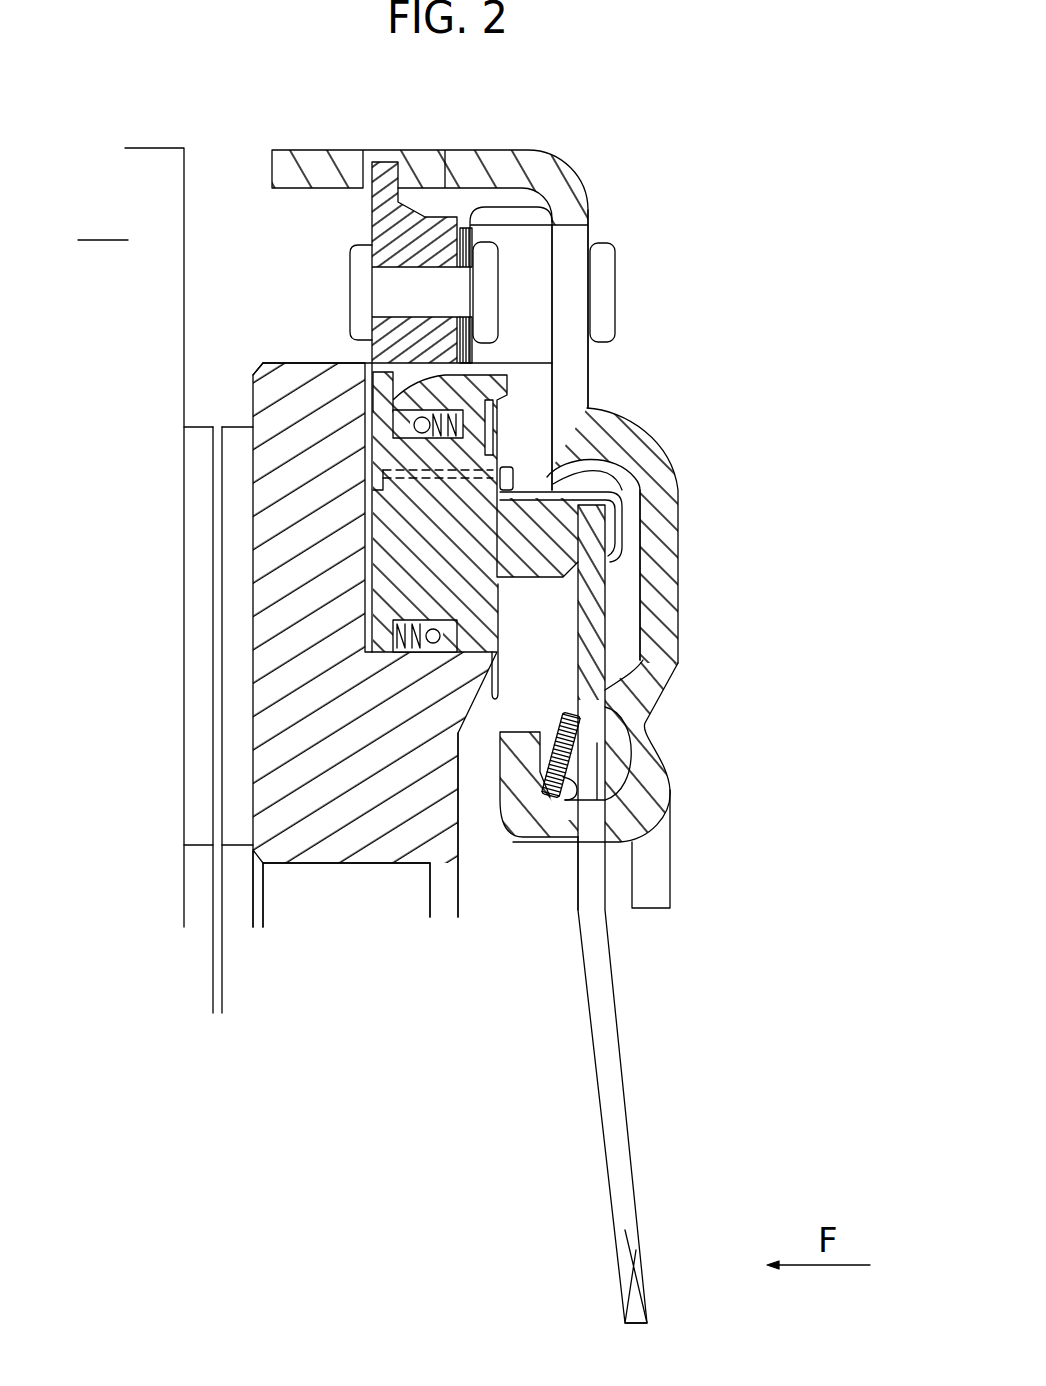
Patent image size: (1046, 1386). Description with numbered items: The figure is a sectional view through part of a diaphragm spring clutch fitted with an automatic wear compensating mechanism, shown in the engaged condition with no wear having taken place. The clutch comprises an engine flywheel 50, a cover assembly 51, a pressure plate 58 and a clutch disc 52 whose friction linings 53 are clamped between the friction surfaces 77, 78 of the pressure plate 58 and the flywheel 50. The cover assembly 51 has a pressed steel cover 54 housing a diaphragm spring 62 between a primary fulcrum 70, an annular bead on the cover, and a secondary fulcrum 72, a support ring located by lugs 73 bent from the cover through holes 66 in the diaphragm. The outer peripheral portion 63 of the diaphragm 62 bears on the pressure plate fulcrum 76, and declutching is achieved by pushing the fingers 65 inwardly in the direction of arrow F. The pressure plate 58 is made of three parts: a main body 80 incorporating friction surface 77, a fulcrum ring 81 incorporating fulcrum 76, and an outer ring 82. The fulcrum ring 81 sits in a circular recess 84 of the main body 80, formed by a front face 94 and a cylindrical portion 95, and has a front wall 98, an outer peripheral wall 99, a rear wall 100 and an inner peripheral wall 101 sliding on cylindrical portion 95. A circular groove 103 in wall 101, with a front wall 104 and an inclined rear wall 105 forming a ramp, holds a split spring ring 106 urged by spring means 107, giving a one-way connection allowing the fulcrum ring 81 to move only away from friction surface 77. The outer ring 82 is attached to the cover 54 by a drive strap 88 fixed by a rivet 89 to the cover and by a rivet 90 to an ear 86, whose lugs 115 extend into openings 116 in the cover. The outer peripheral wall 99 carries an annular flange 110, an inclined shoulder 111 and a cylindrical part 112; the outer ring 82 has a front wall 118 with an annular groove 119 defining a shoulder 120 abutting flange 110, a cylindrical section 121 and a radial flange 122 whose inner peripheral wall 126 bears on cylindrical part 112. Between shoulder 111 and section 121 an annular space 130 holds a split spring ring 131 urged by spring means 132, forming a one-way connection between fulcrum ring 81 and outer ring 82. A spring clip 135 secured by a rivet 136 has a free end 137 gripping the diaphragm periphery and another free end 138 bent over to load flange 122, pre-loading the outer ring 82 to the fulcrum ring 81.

The engine flywheel 50 is at (103, 221).
The cover assembly 51 is at (685, 783).
The clutch disc 52 is at (212, 995).
The friction linings 53 is at (228, 775).
The pressed steel cover 54 is at (550, 165).
The pressure plate 58 is at (378, 868).
The diaphragm spring 62 is at (645, 1080).
The outer peripheral portion of the diaphragm 63 is at (648, 588).
The fingers of the diaphragm 65 is at (641, 1230).
The holes in the diaphragm 66 is at (577, 855).
The primary fulcrum 70 is at (643, 660).
The secondary fulcrum 72 is at (590, 843).
The lugs 73 is at (615, 830).
The pressure plate fulcrum 76 is at (613, 543).
The friction surface of pressure plate 77 is at (257, 377).
The friction surface of flywheel 78 is at (187, 255).
The main body 80 is at (282, 725).
The fulcrum ring 81 is at (500, 578).
The outer ring 82 is at (397, 247).
The circular recess 84 is at (380, 522).
The ears 86 is at (475, 157).
The drive strap 88 is at (535, 204).
The rivet 89 is at (603, 277).
The rivet 90 is at (487, 263).
The front face of recess 94 is at (385, 443).
The cylindrical portion of recess 95 is at (378, 658).
The front wall of fulcrum ring 98 is at (375, 560).
The outer peripheral wall of fulcrum ring 99 is at (395, 418).
The rear wall of fulcrum ring 100 is at (502, 605).
The inner peripheral wall of fulcrum ring 101 is at (495, 693).
The circular groove 103 is at (458, 655).
The front wall of circular groove 104 is at (373, 678).
The inclined rear wall 105 is at (447, 655).
The split spring ring 106 is at (430, 650).
The spring means 107 is at (365, 700).
The annular flange 110 is at (365, 390).
The inclined shoulder 111 is at (455, 378).
The cylindrical part 112 is at (553, 418).
The lugs 115 is at (392, 150).
The openings 116 is at (420, 157).
The front wall of outer ring 118 is at (367, 337).
The annular groove 119 is at (362, 345).
The radially extending shoulder 120 is at (262, 368).
The cylindrical section 121 is at (463, 333).
The radial flange 122 is at (565, 385).
The inner peripheral wall of radial flange 126 is at (573, 428).
The annular space 130 is at (378, 488).
The split spring ring 131 is at (383, 461).
The spring means 132 is at (378, 490).
The spring clip 135 is at (678, 490).
The rivet 136 is at (627, 455).
The free end of spring clip 137 is at (640, 522).
The other free end of spring clip 138 is at (585, 382).